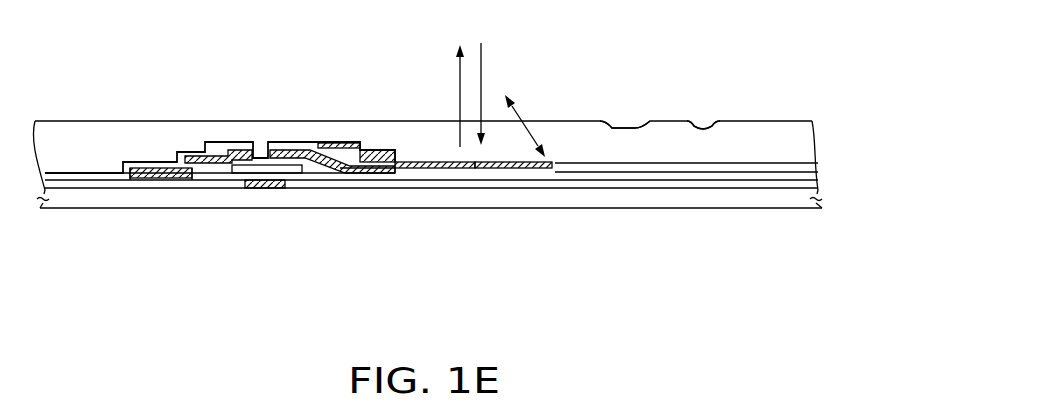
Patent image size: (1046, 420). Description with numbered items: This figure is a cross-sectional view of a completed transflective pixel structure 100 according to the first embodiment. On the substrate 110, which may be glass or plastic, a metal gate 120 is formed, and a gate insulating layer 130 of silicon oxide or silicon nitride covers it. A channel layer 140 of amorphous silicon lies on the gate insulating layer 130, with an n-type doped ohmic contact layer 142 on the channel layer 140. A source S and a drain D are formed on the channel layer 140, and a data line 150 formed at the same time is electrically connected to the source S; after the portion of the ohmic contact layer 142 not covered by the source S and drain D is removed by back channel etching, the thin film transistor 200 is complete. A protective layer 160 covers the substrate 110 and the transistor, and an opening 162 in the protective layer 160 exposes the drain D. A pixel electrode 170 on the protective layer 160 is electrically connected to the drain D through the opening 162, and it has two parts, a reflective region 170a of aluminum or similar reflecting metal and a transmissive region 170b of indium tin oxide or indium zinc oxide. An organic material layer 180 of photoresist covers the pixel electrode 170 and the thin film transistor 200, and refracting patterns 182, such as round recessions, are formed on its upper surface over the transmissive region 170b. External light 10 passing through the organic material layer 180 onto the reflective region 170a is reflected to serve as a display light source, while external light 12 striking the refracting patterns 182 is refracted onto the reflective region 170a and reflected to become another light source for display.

The transflective pixel structure 100 is at (802, 259).
The substrate 110 is at (630, 200).
The gate insulating layer 130 is at (436, 186).
The channel layer 140 is at (213, 182).
The data line 150 is at (143, 180).
The gate 120 is at (266, 190).
The ohmic contact layer 142 is at (292, 175).
The source S is at (234, 153).
The drain D is at (287, 150).
The protective layer 160 is at (330, 143).
The opening 162 is at (366, 160).
The pixel electrode 170 is at (592, 266).
The reflective region 170a is at (510, 168).
The transmissive region 170b is at (563, 165).
The organic material layer 180 is at (757, 128).
The refracting patterns 182 is at (703, 120).
The external light 12 is at (612, 120).
The external light 10 is at (500, 83).
The thin film transistor 200 is at (192, 134).